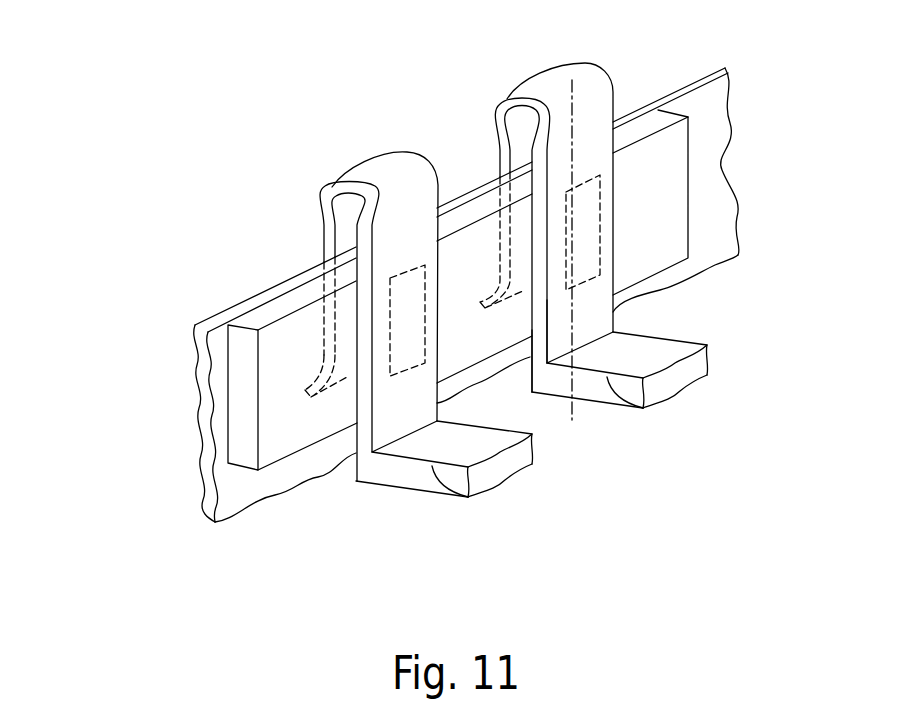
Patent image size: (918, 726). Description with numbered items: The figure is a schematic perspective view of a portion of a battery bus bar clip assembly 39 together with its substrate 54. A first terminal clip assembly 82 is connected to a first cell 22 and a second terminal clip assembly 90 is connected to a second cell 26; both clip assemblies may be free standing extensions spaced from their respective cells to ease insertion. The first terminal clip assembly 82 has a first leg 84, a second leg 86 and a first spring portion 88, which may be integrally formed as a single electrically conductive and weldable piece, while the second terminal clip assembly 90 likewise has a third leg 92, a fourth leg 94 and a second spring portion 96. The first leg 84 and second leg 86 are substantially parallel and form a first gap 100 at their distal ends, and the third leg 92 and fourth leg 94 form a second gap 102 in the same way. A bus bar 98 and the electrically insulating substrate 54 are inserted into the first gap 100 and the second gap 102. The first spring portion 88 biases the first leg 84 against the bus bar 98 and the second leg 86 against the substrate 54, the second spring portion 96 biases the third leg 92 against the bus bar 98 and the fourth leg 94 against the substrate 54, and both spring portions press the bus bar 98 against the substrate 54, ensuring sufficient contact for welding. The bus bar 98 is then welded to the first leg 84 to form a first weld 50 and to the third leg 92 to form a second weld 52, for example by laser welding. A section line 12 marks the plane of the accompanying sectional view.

The section line 12- 12 is at (572, 80).
The first cell 22 is at (460, 447).
The second cell 26 is at (643, 408).
The battery bus bar clip assembly 39 is at (166, 324).
The first weld 50 is at (267, 316).
The second weld 52 is at (620, 276).
The substrate 54 is at (217, 358).
The first terminal clip assembly 82 is at (356, 482).
The first leg 84 is at (320, 364).
The second leg 86 is at (327, 253).
The first spring portion 88 is at (392, 175).
The second terminal clip assembly 90 is at (585, 330).
The third leg 92 is at (603, 288).
The fourth leg 94 is at (500, 235).
The second spring portion 96 is at (586, 102).
The bus bar 98 is at (520, 354).
The first gap 100 is at (385, 403).
The second gap 102 is at (545, 430).